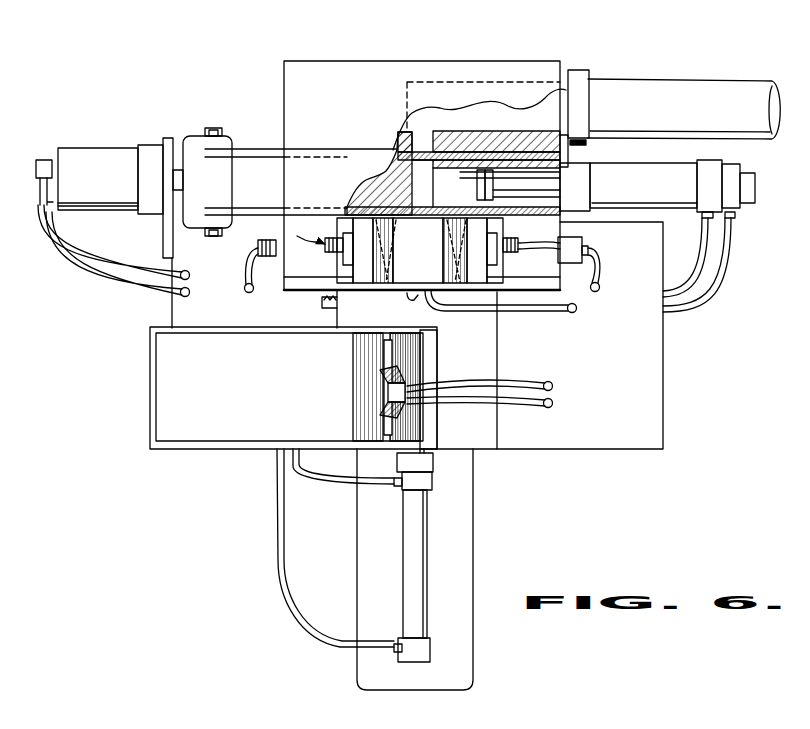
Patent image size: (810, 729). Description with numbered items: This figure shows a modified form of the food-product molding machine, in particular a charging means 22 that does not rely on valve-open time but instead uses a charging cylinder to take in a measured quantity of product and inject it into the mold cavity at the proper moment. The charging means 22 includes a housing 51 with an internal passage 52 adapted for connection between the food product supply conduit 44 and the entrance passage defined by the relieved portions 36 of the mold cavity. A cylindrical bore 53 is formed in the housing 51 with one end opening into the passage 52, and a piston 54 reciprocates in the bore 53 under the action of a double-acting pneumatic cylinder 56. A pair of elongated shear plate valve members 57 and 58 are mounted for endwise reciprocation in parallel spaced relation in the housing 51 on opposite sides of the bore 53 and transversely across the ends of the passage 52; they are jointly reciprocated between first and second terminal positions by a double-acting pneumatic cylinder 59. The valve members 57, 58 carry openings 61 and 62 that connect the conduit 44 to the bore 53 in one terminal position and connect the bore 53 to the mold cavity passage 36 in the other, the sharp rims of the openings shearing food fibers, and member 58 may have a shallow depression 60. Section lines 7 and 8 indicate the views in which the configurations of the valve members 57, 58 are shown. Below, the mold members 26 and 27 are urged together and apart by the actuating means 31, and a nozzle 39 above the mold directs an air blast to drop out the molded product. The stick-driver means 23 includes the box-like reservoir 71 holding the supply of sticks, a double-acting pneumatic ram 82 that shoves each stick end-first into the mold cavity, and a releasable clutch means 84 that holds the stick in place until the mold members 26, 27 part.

The section line 7- 7 is at (192, 150).
The section line 8- 8 is at (44, 208).
The charging means 22 is at (370, 57).
The stick-driver means 23 is at (444, 370).
The mold member 26 is at (382, 280).
The mold member 27 is at (460, 280).
The actuating means 31 is at (250, 285).
The relieved portions 36 is at (445, 226).
The nozzle 39 is at (420, 296).
The food product supply conduit 44 is at (686, 82).
The housing 51 is at (298, 176).
The internal passage 52 is at (390, 166).
The bore 53 is at (462, 172).
The piston 54 is at (492, 168).
The double-acting pneumatic cylinder 56 is at (652, 195).
The shear plate valve member 57 is at (255, 152).
The shear plate valve member 58 is at (250, 218).
The double-acting pneumatic cylinder 59 is at (112, 150).
The shallow depression 60 is at (435, 207).
The opening 61 is at (409, 134).
The opening 62 is at (353, 206).
The box-like reservoir 71 is at (148, 401).
The double-acting pneumatic ram 82 is at (423, 580).
The releasable clutch means 84 is at (320, 305).